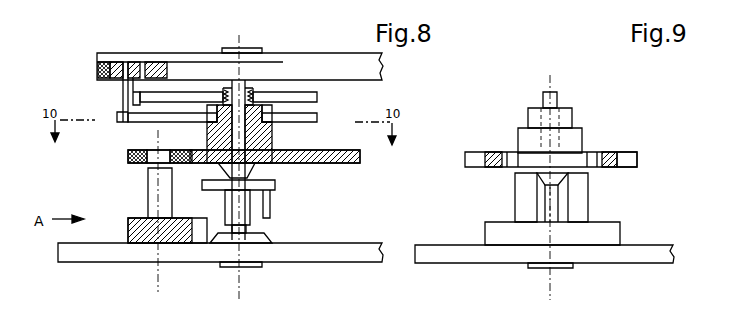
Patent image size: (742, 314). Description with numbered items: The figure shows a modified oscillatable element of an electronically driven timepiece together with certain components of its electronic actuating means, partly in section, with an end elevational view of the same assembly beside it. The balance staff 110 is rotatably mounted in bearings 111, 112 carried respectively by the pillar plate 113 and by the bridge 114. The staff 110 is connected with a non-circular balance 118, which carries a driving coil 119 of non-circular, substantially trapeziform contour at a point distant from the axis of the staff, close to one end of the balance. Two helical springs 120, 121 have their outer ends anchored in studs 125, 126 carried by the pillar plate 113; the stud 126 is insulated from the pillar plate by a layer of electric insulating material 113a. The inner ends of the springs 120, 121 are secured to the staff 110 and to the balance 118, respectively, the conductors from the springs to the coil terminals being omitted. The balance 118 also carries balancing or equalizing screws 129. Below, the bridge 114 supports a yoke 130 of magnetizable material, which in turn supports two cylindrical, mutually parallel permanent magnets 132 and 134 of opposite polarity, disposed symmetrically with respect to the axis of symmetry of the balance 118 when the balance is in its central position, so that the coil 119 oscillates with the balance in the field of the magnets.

In FIG. 8, the balance staff 110 is at (265, 80).
In FIG. 9, the balance staff 110 is at (560, 100).
In FIG. 8, the bearing 111 is at (247, 48).
In FIG. 8, the bearing 112 is at (250, 266).
In FIG. 9, the bearing 112 is at (565, 268).
In FIG. 8, the pillar plate 113 is at (340, 62).
In FIG. 8, the layer of electric insulating material 113a is at (100, 68).
In FIG. 8, the bridge 114 is at (324, 254).
In FIG. 9, the bridge 114 is at (648, 254).
In FIG. 8, the balance 118 is at (336, 152).
In FIG. 9, the balance 118 is at (640, 154).
In FIG. 8, the driving coil 119 is at (134, 150).
In FIG. 9, the driving coil 119 is at (574, 156).
In FIG. 8, the helical spring 120 is at (183, 92).
In FIG. 8, the helical spring 121 is at (212, 113).
In FIG. 8, the stud 125 is at (150, 92).
In FIG. 8, the stud 126 is at (122, 98).
In FIG. 9, the balancing screw 129 is at (496, 156).
In FIG. 8, the yoke 130 is at (178, 246).
In FIG. 9, the yoke 130 is at (497, 246).
In FIG. 8, the permanent magnet 132 is at (148, 200).
In FIG. 9, the permanent magnet 132 is at (516, 194).
In FIG. 9, the permanent magnet 134 is at (584, 194).